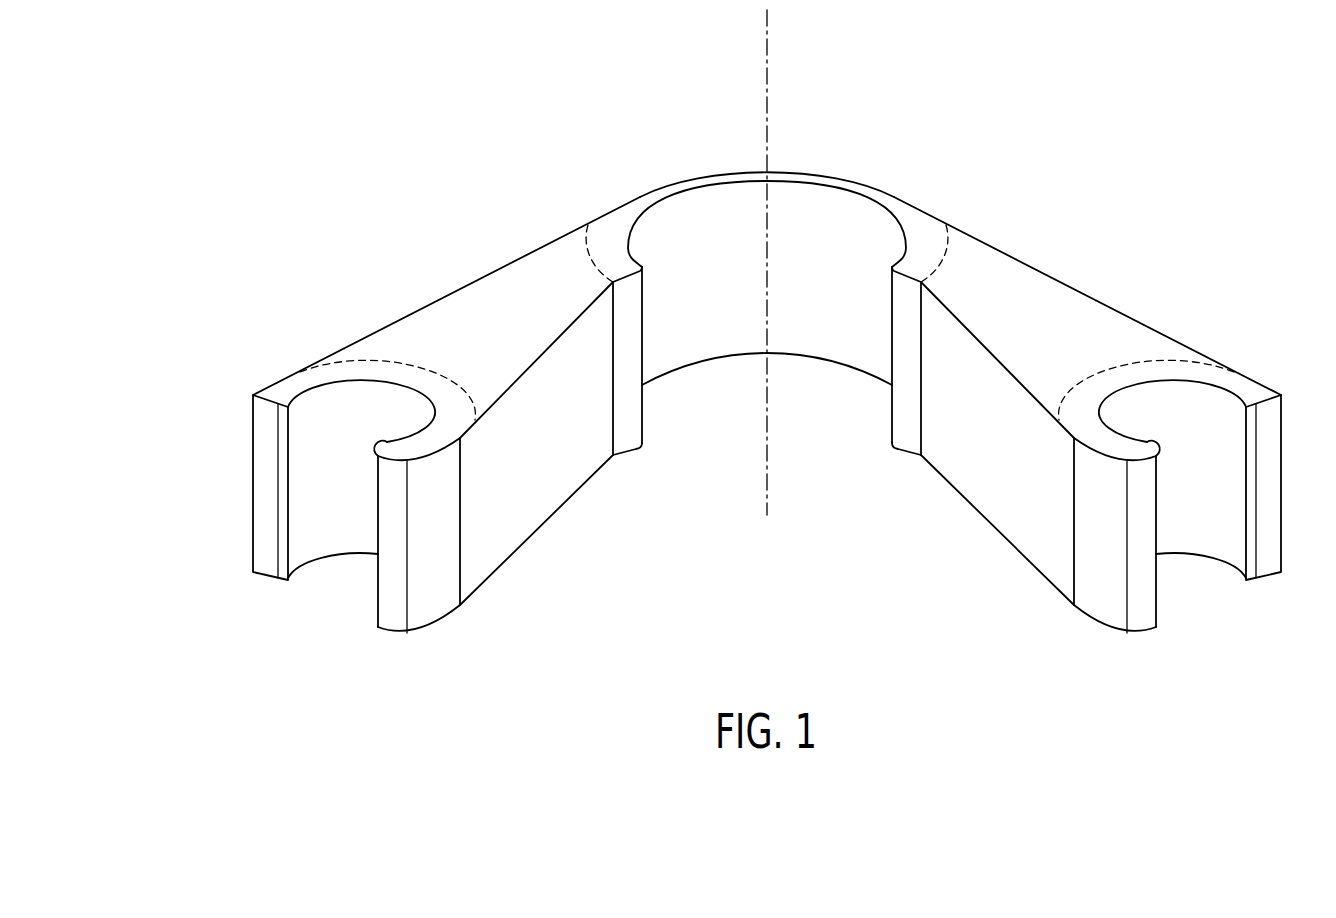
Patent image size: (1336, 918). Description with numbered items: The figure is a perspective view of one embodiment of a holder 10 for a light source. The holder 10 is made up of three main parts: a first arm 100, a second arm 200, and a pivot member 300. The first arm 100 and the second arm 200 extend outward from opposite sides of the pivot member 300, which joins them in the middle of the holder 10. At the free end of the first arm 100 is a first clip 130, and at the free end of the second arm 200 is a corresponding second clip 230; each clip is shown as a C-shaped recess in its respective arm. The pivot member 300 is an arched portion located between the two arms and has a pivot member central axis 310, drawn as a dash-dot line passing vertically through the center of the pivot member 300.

The holder 10 is at (766, 316).
The first arm 100 is at (423, 415).
The first clip 130 is at (291, 498).
The second arm 200 is at (1110, 415).
The second clip 230 is at (1244, 500).
The pivot member 300 is at (690, 206).
The pivot member central axis 310 is at (770, 80).